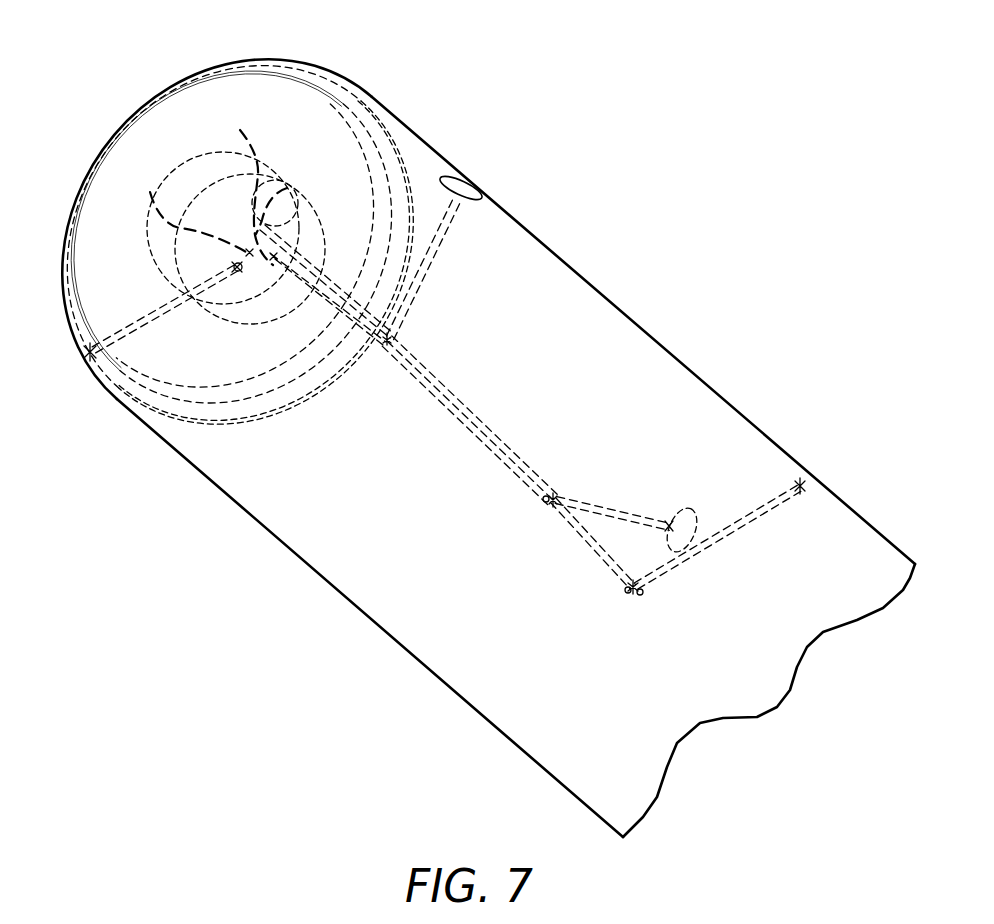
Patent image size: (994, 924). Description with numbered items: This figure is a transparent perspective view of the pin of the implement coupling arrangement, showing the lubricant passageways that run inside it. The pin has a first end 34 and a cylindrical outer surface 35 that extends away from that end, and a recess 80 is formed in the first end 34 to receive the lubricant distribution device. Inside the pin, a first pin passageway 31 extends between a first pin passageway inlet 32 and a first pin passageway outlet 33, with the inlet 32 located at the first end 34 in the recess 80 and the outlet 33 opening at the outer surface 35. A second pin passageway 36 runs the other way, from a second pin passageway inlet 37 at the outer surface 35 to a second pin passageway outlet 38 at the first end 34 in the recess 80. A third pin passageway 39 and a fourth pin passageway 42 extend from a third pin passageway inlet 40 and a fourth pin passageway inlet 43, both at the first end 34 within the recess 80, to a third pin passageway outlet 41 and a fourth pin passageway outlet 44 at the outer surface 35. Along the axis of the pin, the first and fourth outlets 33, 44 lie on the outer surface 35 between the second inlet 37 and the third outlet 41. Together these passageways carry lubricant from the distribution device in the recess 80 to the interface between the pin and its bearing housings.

The first pin passageway 31 is at (500, 440).
The first pin passageway inlet 32 is at (242, 133).
The first pin passageway outlet 33 is at (688, 510).
The first end 34 is at (258, 54).
The outer surface 35 is at (630, 330).
The second pin passageway 36 is at (569, 534).
The second pin passageway inlet 37 is at (810, 473).
The second pin passageway outlet 38 is at (209, 161).
The third pin passageway 39 is at (176, 308).
The third pin passageway inlet 40 is at (158, 203).
The third pin passageway outlet 41 is at (84, 356).
The fourth pin passageway 42 is at (326, 262).
The fourth pin passageway inlet 43 is at (297, 179).
The fourth pin passageway outlet 44 is at (464, 181).
The recess 80 is at (150, 258).